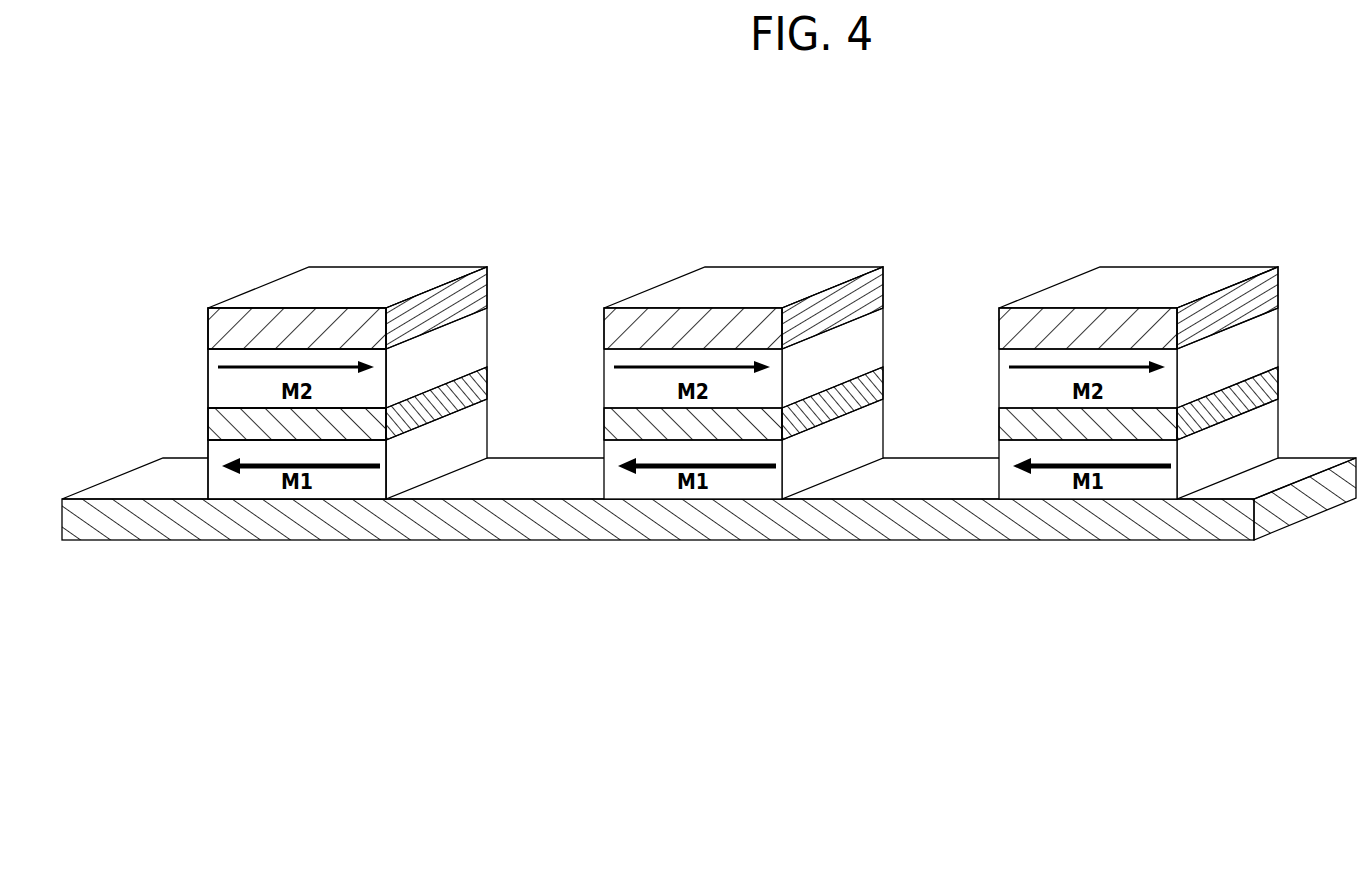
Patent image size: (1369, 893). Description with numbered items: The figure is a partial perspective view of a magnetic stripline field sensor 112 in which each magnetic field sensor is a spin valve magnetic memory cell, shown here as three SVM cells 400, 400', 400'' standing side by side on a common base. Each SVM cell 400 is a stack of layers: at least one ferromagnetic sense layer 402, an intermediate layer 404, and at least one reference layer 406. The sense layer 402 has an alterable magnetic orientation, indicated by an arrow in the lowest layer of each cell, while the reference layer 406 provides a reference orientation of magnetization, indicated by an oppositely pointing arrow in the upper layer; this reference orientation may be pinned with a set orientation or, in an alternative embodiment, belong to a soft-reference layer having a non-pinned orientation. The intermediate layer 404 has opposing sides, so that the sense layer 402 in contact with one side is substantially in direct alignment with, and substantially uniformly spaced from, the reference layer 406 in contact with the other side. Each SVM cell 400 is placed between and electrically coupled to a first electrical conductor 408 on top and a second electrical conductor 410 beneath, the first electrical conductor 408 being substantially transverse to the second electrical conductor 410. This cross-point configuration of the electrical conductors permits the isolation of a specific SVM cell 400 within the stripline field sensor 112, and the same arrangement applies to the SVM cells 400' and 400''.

The stripline field sensor 112 is at (1033, 169).
The SVM cell 400 is at (284, 347).
The SVM cell 400' is at (743, 347).
The SVM cell 400'' is at (1138, 347).
The ferromagnetic sense layer 402 is at (225, 477).
The intermediate layer 404 is at (223, 427).
The reference layer 406 is at (228, 378).
The first electrical conductor 408 is at (267, 291).
The second electrical conductor 410 is at (333, 530).